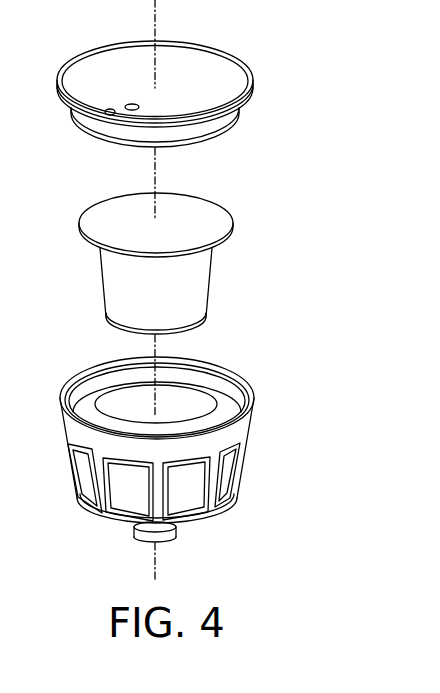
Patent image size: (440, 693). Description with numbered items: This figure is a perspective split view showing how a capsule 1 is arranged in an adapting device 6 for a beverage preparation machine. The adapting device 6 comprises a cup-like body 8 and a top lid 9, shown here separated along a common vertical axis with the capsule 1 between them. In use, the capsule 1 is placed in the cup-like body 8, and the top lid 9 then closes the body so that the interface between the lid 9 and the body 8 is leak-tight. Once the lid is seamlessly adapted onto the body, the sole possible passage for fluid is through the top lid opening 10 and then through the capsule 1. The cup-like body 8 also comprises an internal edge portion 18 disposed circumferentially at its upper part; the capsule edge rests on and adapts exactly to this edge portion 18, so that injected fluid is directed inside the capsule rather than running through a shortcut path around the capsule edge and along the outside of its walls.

The capsule 1 is at (90, 281).
The adapting device 6 is at (171, 441).
The cup-like body 8 is at (60, 428).
The top lid 9 is at (213, 63).
The top lid opening 10 is at (110, 109).
The internal edge portion 18 is at (92, 396).